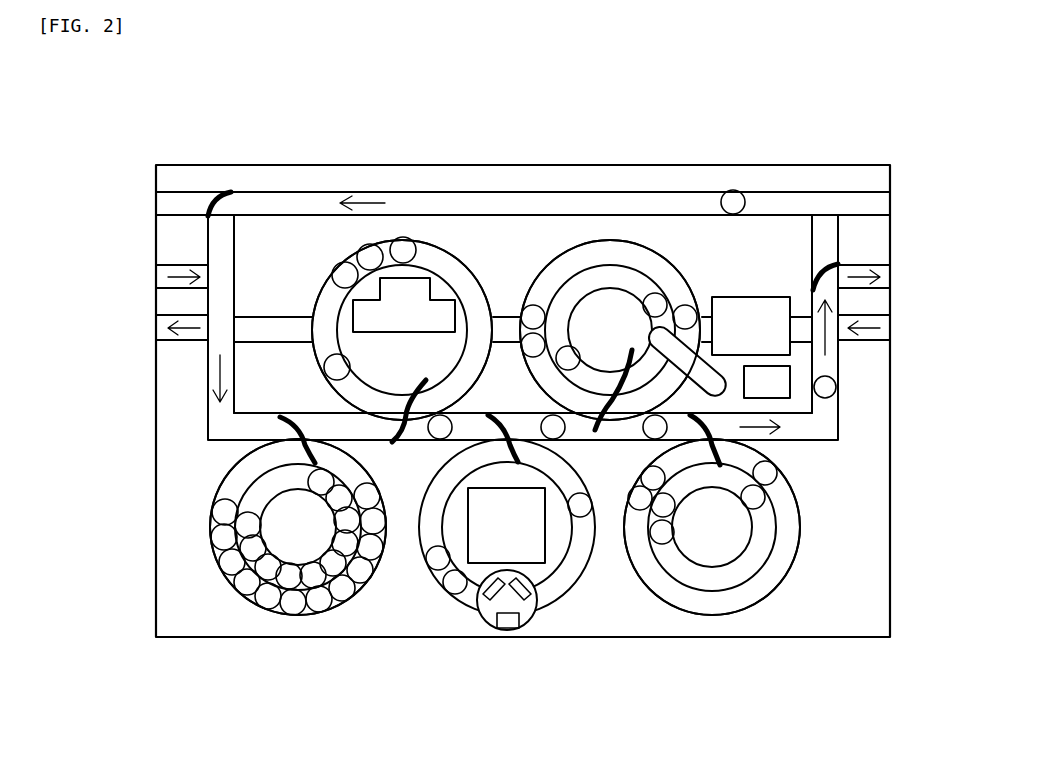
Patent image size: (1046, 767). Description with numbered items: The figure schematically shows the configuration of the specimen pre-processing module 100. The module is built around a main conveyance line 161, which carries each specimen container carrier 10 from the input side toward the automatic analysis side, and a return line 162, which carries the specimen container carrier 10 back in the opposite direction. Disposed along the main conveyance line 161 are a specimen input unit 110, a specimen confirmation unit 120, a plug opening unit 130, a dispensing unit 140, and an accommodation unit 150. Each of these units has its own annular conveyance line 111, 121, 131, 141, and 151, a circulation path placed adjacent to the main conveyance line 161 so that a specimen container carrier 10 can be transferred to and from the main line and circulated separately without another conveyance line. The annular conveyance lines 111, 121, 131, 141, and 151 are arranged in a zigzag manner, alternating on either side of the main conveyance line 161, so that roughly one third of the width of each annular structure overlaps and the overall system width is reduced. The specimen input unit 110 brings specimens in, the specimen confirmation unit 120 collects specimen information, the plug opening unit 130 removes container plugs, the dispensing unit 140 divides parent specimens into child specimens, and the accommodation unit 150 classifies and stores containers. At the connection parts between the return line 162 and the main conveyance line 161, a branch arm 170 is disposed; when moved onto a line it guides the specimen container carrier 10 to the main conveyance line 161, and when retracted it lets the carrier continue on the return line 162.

The specimen pre-processing module 100 is at (333, 163).
The specimen container carrier 10 is at (733, 190).
The specimen input unit 110 is at (265, 606).
The annular conveyance line 111 is at (218, 478).
The specimen confirmation unit 120 is at (415, 262).
The annular conveyance line 121 is at (478, 262).
The plug opening unit 130 is at (569, 578).
The annular conveyance line 131 is at (598, 564).
The dispensing unit 140 is at (641, 258).
The annular conveyance line 141 is at (607, 240).
The accommodation unit 150 is at (700, 600).
The annular conveyance line 151 is at (802, 557).
The main conveyance line 161 is at (215, 240).
The return line 162 is at (568, 203).
The branch arm 170 is at (212, 192).